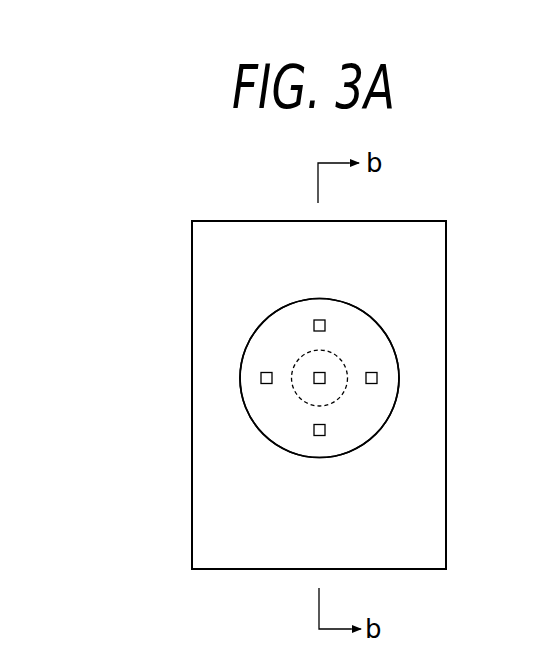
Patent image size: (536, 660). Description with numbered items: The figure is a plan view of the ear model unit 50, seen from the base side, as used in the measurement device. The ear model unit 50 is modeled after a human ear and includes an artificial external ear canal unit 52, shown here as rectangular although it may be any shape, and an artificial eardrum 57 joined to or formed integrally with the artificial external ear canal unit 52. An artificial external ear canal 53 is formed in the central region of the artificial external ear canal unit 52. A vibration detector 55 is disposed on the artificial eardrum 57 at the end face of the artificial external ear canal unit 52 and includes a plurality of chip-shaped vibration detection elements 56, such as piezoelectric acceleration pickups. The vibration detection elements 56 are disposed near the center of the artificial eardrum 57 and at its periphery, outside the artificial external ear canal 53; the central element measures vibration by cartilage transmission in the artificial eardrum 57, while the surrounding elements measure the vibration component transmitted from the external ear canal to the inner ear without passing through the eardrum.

The ear model unit 50 is at (156, 266).
The artificial external ear canal unit 52 is at (287, 220).
The artificial external ear canal 53 is at (292, 362).
The vibration detector 55 is at (232, 424).
The vibration detection element 56 is at (325, 384).
The artificial eardrum 57 is at (380, 323).